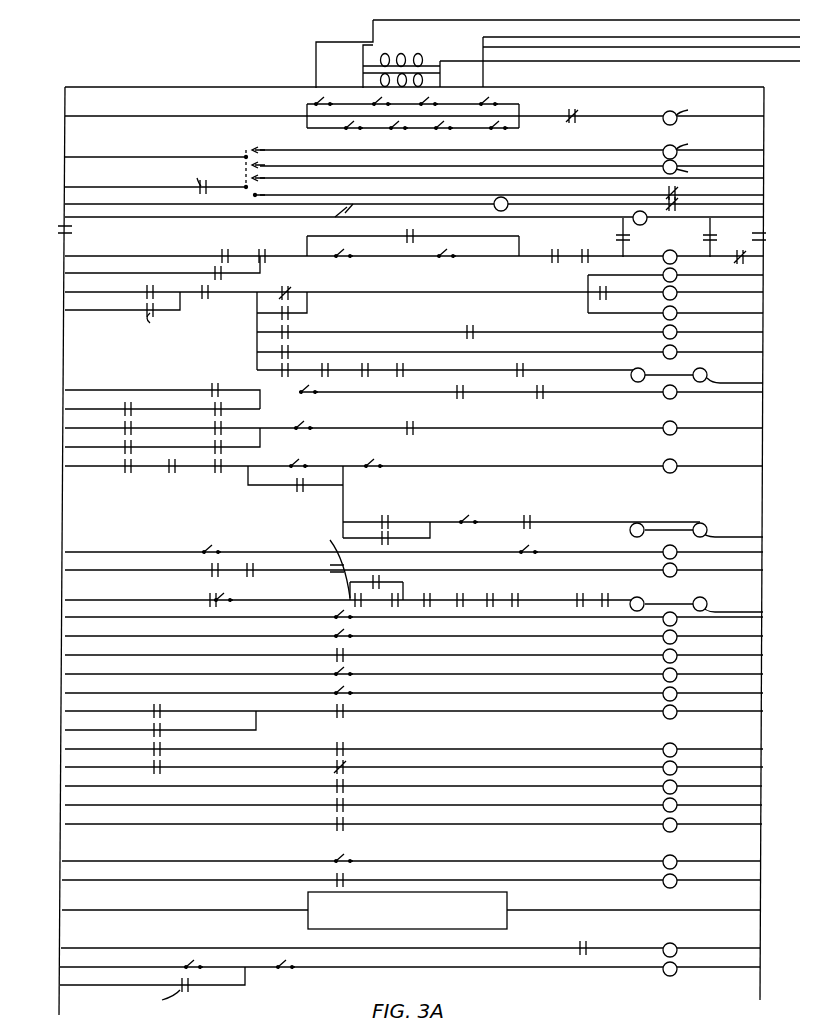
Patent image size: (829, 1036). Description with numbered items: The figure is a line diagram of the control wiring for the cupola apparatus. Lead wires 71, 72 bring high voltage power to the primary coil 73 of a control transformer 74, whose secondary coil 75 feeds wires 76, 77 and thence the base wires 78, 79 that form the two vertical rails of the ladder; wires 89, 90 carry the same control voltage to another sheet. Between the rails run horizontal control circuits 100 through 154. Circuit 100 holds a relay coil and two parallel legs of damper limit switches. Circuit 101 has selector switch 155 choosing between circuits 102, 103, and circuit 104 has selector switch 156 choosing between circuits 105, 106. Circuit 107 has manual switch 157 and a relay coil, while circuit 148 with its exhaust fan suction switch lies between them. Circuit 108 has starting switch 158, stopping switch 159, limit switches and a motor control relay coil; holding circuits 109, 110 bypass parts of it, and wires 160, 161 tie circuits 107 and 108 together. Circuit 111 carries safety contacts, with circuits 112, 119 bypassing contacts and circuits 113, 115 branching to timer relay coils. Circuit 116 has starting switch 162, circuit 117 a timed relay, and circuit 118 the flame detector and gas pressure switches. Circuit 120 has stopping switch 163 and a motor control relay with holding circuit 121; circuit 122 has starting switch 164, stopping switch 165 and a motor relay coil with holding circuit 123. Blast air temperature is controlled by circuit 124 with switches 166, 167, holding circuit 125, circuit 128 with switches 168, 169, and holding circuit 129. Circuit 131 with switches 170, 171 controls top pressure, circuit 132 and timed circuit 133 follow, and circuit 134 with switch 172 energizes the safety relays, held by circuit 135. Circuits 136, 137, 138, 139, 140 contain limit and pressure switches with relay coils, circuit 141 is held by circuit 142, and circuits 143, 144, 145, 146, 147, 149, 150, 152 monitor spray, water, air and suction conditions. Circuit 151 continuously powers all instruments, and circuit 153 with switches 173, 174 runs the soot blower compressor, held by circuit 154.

The wire 71 is at (605, 46).
The wire 72 is at (585, 61).
The primary coil 73 is at (422, 56).
The control transformer 74 is at (362, 66).
The secondary coil 75 is at (423, 79).
The wire 76 is at (232, 87).
The wire 77 is at (580, 87).
The base wire 78 is at (65, 100).
The base wire 79 is at (765, 103).
The wire 89 is at (316, 52).
The wire 90 is at (484, 70).
The circuit 100 is at (114, 117).
The circuit 101 is at (116, 158).
The circuit 102 is at (292, 150).
The circuit 103 is at (405, 167).
The circuit 104 is at (124, 188).
The circuit 105 is at (294, 179).
The circuit 106 is at (421, 196).
The circuit 107 is at (114, 218).
The circuit 108 is at (116, 255).
The holding circuit 109 is at (376, 237).
The circuit 110 is at (116, 274).
The circuit 111 is at (112, 293).
The circuit 112 is at (112, 311).
The circuit 113 is at (763, 275).
The circuit 115 is at (763, 313).
The circuit 116 is at (540, 331).
The circuit 117 is at (410, 348).
The circuit 118 is at (476, 371).
The circuit 119 is at (258, 316).
The circuit 120 is at (130, 390).
The holding circuit 121 is at (65, 408).
The circuit 122 is at (65, 427).
The holding circuit 123 is at (262, 447).
The circuit 124 is at (65, 465).
The holding circuit 125 is at (330, 488).
The circuit 128 is at (538, 520).
The holding circuit 129 is at (432, 537).
The circuit 131 is at (120, 551).
The circuit 132 is at (65, 569).
The time controlled circuit 133 is at (330, 580).
The circuit 134 is at (120, 599).
The holding circuit 135 is at (309, 541).
The circuit 136 is at (108, 617).
The circuit 137 is at (178, 636).
The circuit 138 is at (138, 655).
The circuit 139 is at (106, 674).
The circuit 140 is at (187, 693).
The circuit 141 is at (97, 710).
The holding circuit 142 is at (97, 729).
The circuit 143 is at (97, 748).
The circuit 144 is at (65, 766).
The circuit 145 is at (217, 786).
The circuit 146 is at (148, 805).
The circuit 147 is at (238, 824).
The circuit 148 is at (114, 204).
The circuit 149 is at (140, 862).
The circuit 150 is at (114, 881).
The circuit 151 is at (204, 910).
The circuit 152 is at (128, 948).
The circuit 153 is at (105, 967).
The holding circuit 154 is at (80, 988).
The selector switch 155 is at (247, 152).
The selector switch 156 is at (247, 183).
The switch 157 is at (344, 212).
The starting switch 158 is at (225, 249).
The stopping switch 159 is at (265, 249).
The wire 160 is at (575, 232).
The wire 161 is at (716, 240).
The starting switch 162 is at (466, 329).
The stopping switch 163 is at (310, 394).
The starting switch 164 is at (122, 426).
The stopping switch 165 is at (330, 440).
The starting switch 166 is at (305, 460).
The stopping switch 167 is at (380, 470).
The starting switch 168 is at (385, 518).
The stopping switch 169 is at (470, 518).
The starting switch 170 is at (205, 548).
The stopping switch 171 is at (530, 549).
The switch 172 is at (205, 598).
The starting switch 173 is at (202, 960).
The stopping switch 174 is at (292, 976).